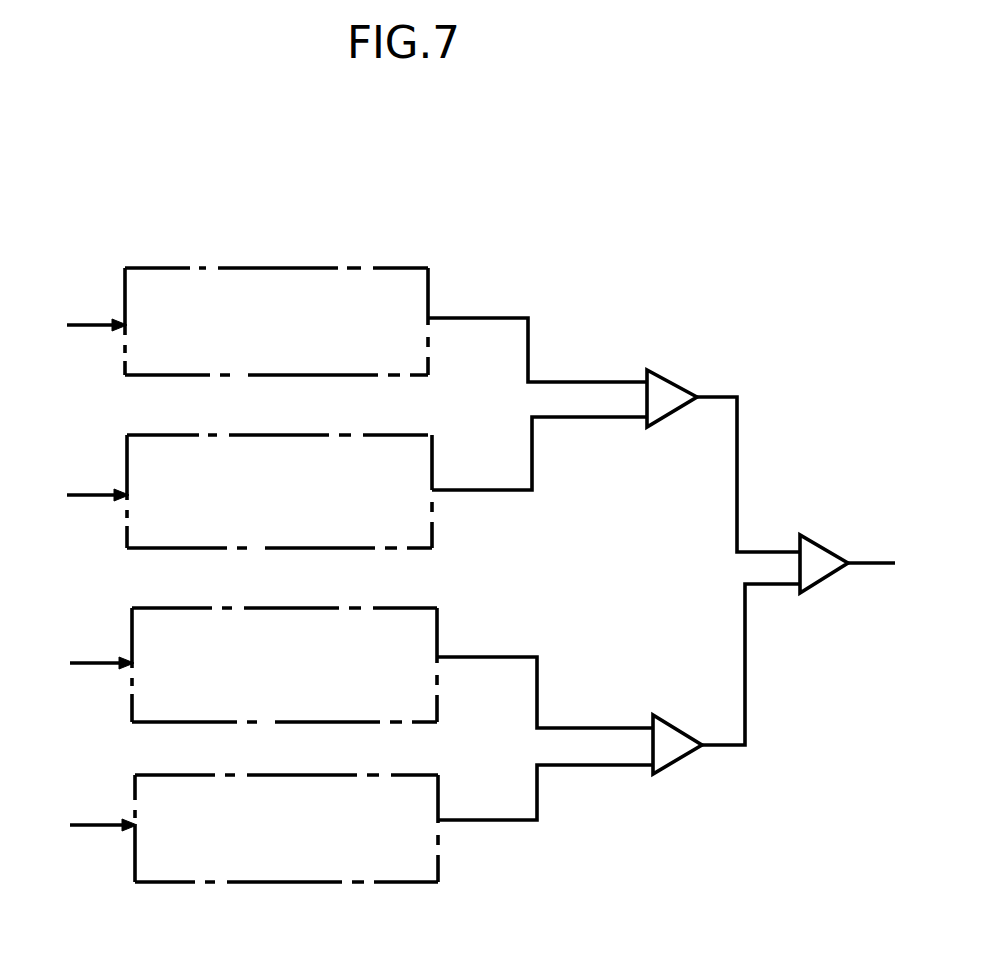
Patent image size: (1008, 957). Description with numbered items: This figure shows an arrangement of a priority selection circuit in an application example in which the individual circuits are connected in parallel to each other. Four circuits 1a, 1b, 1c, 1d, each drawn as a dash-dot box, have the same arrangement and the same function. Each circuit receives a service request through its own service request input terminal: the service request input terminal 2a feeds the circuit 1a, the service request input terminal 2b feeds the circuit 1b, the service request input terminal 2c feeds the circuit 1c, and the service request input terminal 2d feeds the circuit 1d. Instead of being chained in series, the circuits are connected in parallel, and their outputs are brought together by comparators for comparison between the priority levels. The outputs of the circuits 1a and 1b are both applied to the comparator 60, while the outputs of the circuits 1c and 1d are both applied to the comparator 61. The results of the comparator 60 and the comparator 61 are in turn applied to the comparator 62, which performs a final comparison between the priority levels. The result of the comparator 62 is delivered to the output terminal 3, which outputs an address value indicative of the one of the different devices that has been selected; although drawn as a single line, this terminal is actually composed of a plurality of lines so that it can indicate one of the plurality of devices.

The circuit 1a is at (295, 268).
The circuit 1b is at (288, 435).
The circuit 1c is at (300, 608).
The circuit 1d is at (305, 775).
The service request input terminal 2a is at (88, 325).
The service request input terminal 2b is at (95, 495).
The service request input terminal 2c is at (95, 663).
The service request input terminal 2d is at (103, 825).
The comparator 60 is at (672, 382).
The comparator 61 is at (690, 728).
The comparator 62 is at (832, 548).
The output terminal 3 is at (870, 565).